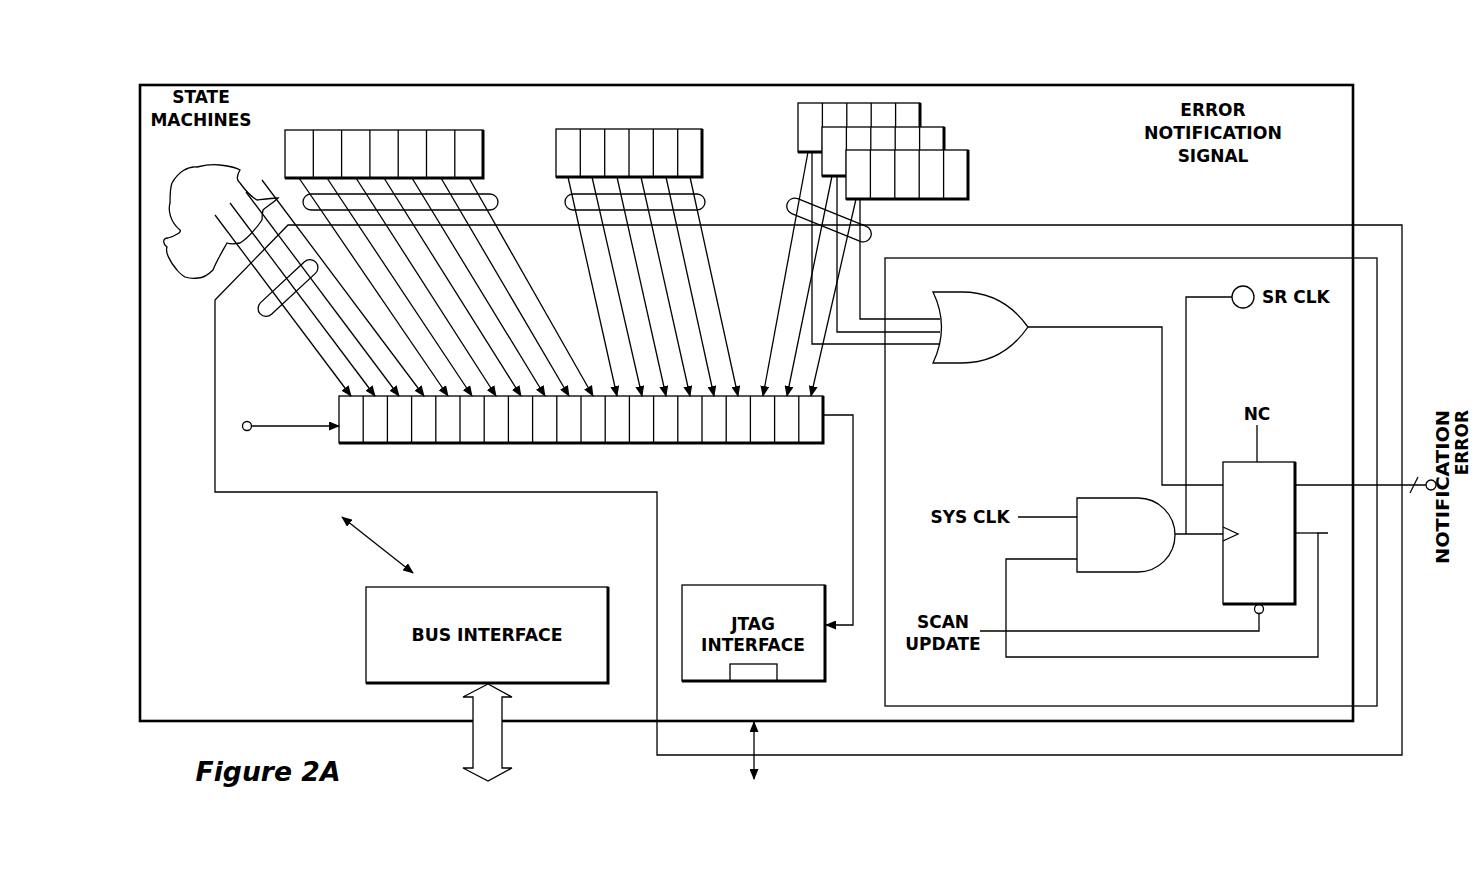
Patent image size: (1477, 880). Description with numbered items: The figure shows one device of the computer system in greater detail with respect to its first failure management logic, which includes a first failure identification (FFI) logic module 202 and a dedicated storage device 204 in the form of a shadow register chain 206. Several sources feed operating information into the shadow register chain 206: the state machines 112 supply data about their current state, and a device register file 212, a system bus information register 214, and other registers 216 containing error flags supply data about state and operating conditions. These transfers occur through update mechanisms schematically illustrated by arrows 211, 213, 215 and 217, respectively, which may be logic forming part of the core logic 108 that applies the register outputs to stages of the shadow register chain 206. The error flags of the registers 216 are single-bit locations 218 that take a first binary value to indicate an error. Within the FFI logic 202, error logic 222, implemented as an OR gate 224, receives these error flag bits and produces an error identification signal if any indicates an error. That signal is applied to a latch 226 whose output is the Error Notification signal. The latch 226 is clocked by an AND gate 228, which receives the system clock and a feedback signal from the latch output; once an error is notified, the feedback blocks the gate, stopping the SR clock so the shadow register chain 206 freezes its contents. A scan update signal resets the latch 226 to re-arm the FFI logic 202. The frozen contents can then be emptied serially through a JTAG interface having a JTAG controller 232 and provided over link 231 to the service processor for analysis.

The core logic 108 is at (850, 684).
The state machines 112 is at (178, 270).
The first failure identification (FFI) logic module 202 is at (947, 668).
The dedicated storage device 204 is at (332, 457).
The shadow register chain 206 is at (402, 444).
The arrows 211 is at (263, 317).
The device register file 212 is at (337, 130).
The arrows 213 is at (498, 202).
The system bus information register 214 is at (595, 129).
The arrows 215 is at (705, 202).
The registers 216 is at (865, 215).
The arrows 217 is at (790, 204).
The single-bit locations 218 is at (835, 140).
The error logic 222 is at (995, 317).
The OR gate 224 is at (1036, 292).
The latch 226 is at (1281, 486).
The AND gate 228 is at (1137, 498).
The link 231 is at (753, 746).
The JTAG controller 232 is at (727, 674).